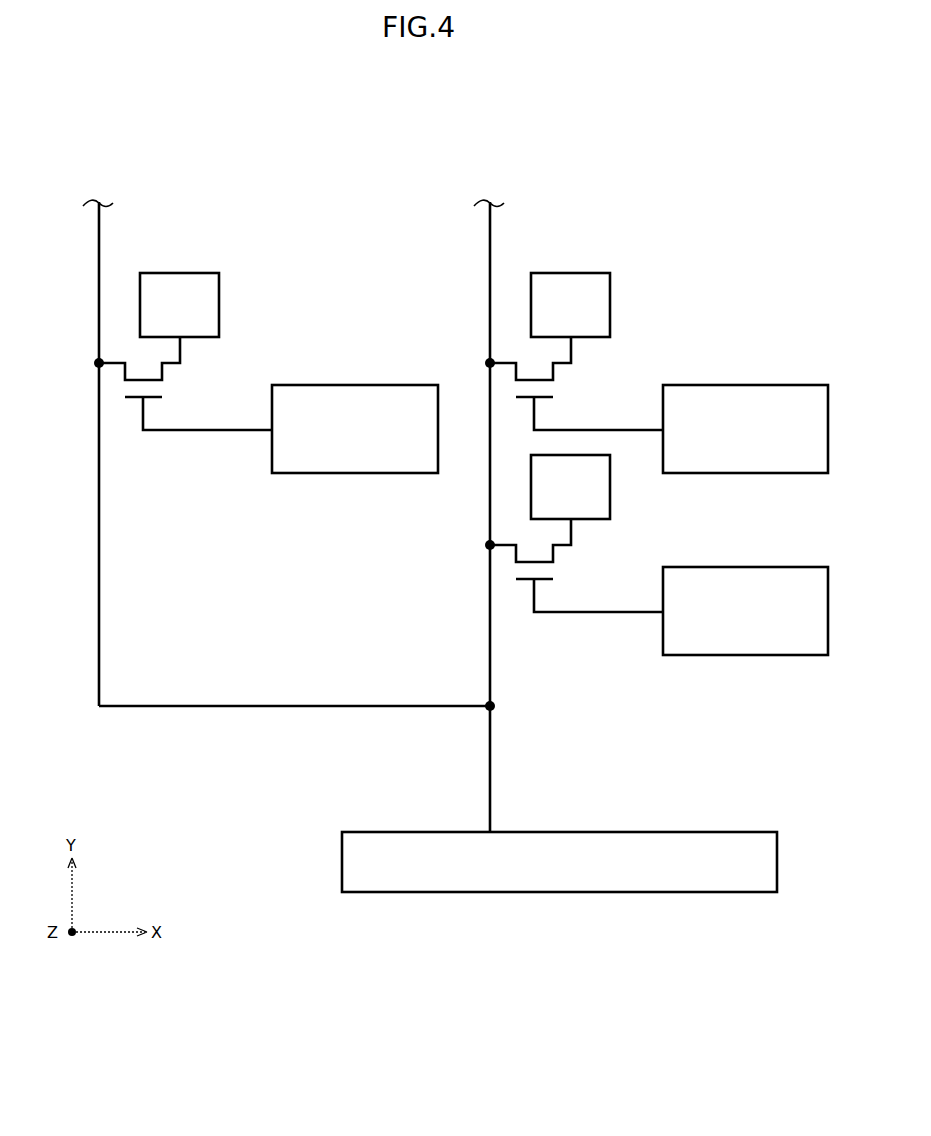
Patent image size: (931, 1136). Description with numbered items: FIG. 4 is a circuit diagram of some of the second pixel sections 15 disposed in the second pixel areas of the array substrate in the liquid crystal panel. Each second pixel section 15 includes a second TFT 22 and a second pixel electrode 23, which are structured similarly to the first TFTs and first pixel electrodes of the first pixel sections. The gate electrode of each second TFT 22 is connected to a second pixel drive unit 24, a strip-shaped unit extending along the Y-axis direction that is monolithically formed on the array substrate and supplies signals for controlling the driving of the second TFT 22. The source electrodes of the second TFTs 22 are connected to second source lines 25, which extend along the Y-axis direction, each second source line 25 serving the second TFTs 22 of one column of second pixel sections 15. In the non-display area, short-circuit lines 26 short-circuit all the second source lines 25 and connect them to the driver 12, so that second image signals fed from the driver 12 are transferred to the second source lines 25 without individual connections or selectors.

The driver 12 is at (565, 892).
The second pixel section 15 is at (176, 241).
The second TFT 22 is at (138, 377).
The second pixel electrode 23 is at (203, 273).
The second pixel drive unit 24 is at (340, 385).
The second source line 25 is at (99, 237).
The short-circuit line 26 is at (491, 771).